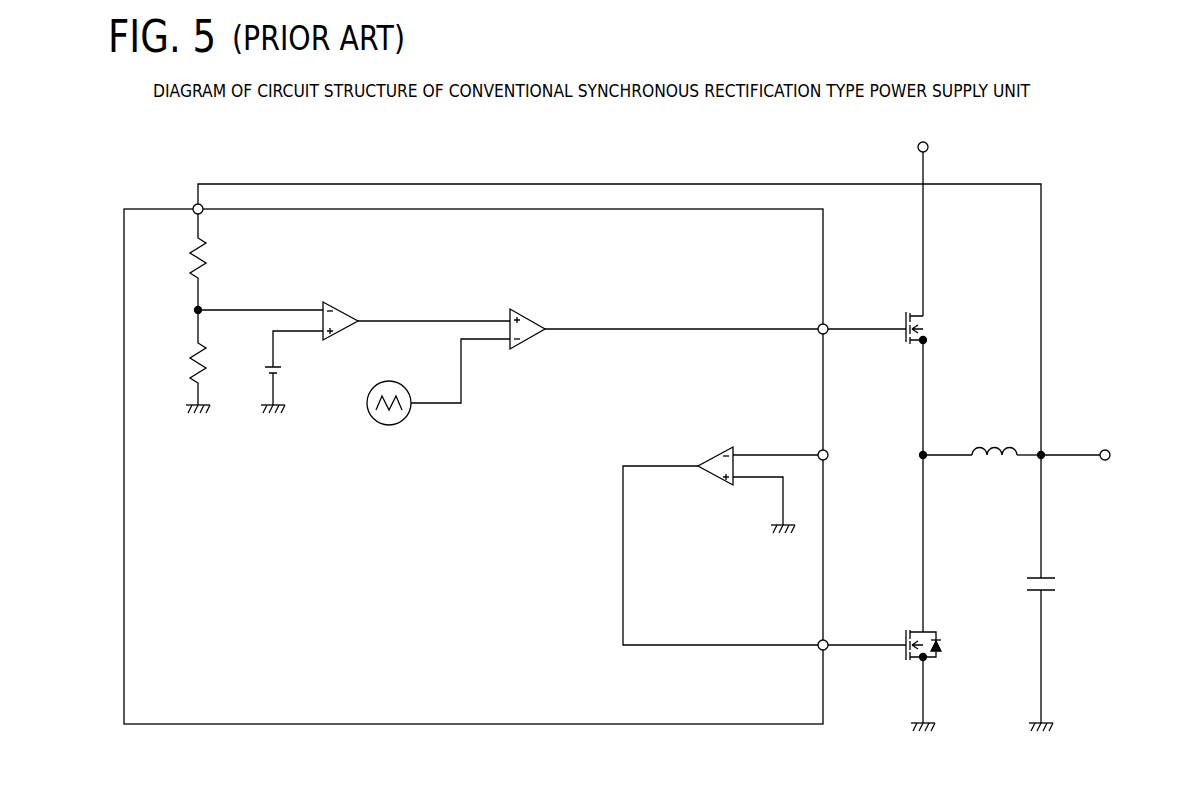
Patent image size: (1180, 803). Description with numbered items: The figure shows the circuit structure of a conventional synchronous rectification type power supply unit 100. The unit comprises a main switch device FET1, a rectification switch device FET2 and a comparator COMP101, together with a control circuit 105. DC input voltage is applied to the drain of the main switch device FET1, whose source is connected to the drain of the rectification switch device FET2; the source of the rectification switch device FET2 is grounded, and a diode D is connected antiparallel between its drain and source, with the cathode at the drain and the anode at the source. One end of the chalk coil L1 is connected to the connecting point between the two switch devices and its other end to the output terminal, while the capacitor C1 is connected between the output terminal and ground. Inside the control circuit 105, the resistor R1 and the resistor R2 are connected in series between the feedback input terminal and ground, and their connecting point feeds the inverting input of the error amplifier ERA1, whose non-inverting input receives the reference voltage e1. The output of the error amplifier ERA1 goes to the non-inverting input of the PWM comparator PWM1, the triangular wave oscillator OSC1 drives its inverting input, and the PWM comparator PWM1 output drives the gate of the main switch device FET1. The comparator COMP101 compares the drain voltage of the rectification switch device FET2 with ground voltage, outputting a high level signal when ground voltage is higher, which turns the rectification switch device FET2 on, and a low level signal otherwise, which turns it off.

The synchronous rectification type power supply unit 100 is at (1050, 135).
The control circuit 105 is at (124, 455).
The resistor R1 is at (181, 262).
The resistor R2 is at (183, 361).
The error amplifier ERA1 is at (354, 306).
The reference voltage e1 is at (292, 372).
The PWM comparator PWM1 is at (652, 316).
The triangular wave oscillator OSC1 is at (438, 382).
The comparator COMP101 is at (720, 532).
The main switch device FET1 is at (901, 472).
The rectification switch device FET2 is at (930, 629).
The diode D is at (946, 646).
The chalk coil L1 is at (982, 436).
The capacitor C1 is at (1053, 579).